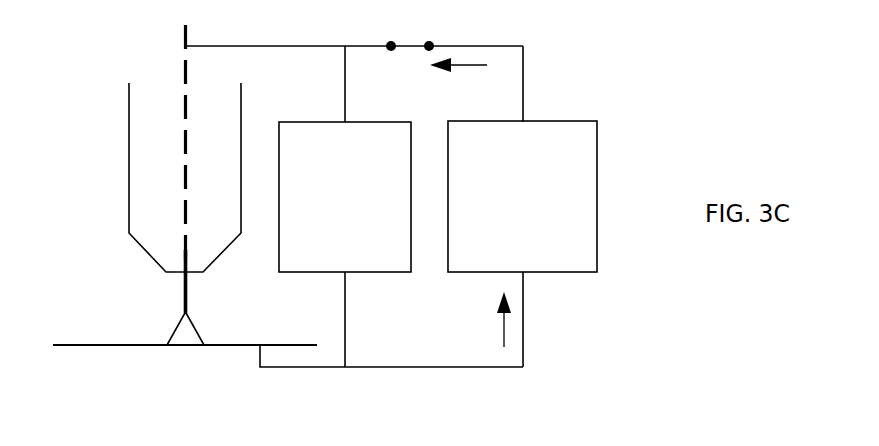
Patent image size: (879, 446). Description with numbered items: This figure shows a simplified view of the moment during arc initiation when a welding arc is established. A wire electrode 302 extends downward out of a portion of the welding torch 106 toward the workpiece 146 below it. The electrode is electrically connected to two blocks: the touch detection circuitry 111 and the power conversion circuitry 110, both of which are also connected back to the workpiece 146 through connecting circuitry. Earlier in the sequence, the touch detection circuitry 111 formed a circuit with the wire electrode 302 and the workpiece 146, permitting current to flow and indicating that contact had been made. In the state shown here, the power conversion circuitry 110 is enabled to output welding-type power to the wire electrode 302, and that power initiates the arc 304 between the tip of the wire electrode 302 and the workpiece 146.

The wire electrode 302 is at (184, 75).
The welding torch 106 is at (129, 160).
The arc 304 is at (195, 326).
The workpiece 146 is at (148, 347).
The touch detection circuitry 111 is at (324, 252).
The power conversion circuitry 110 is at (502, 252).